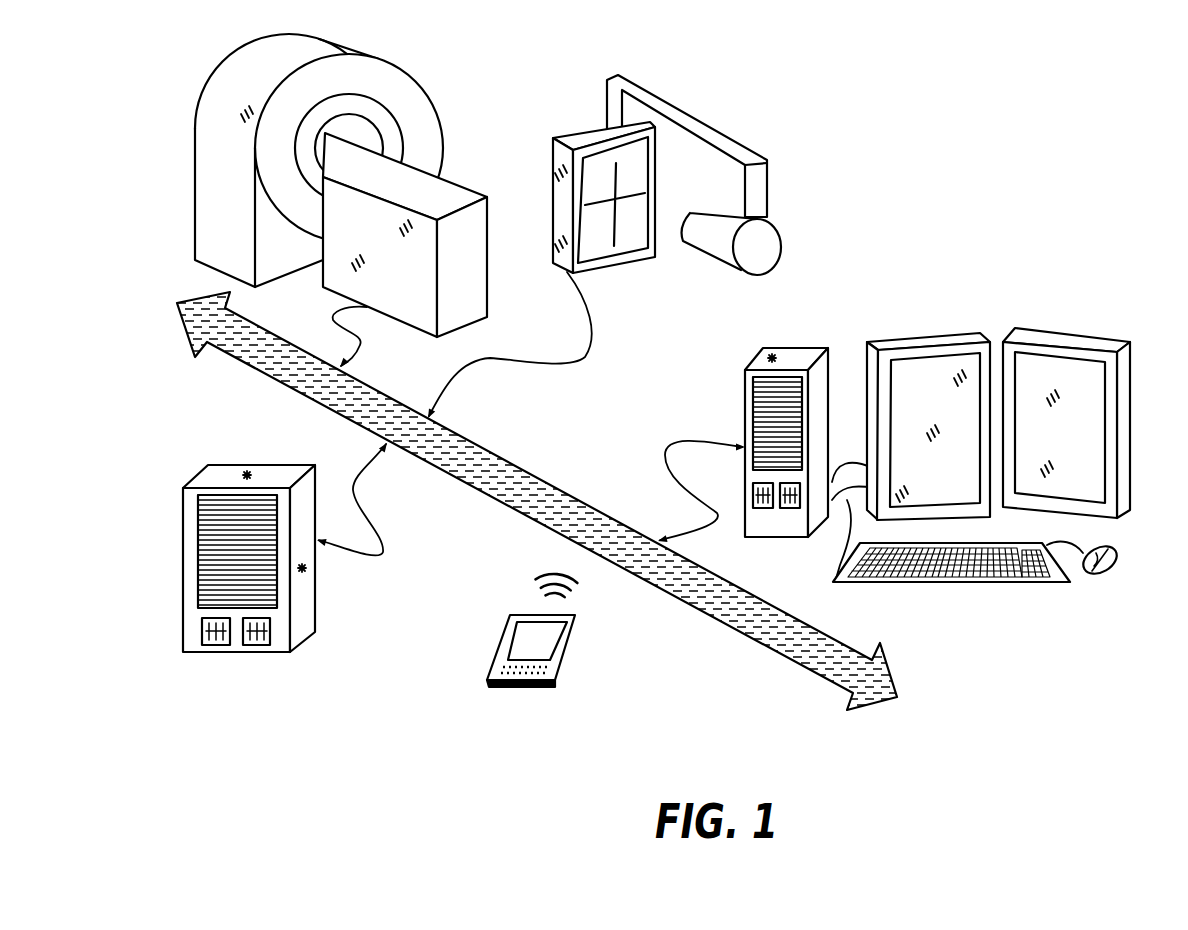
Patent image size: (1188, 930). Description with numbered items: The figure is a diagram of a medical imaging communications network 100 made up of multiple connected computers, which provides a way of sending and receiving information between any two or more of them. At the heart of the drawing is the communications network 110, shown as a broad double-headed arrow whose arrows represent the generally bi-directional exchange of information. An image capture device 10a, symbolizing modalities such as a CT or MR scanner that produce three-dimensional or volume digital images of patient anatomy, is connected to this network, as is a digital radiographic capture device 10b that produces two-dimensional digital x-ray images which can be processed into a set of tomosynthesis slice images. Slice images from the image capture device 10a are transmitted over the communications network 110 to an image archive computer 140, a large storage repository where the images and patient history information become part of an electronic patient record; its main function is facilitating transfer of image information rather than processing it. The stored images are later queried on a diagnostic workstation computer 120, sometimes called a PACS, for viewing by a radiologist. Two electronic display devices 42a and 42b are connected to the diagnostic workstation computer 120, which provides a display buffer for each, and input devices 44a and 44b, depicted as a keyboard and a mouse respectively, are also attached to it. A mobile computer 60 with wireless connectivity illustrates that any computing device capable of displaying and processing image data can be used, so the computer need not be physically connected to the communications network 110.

The medical imaging communications network 100 is at (924, 196).
The image capture device 10a is at (417, 84).
The digital radiographic (DR) capture device 10b is at (668, 107).
The communications network 110 is at (738, 630).
The diagnostic workstation computer 120 is at (745, 368).
The image archive computer 140 is at (182, 603).
The electronic display device 42a is at (893, 335).
The electronic display device 42b is at (1107, 338).
The keyboard 44a is at (1033, 585).
The mouse 44b is at (1113, 553).
The mobile computer 60 is at (488, 667).